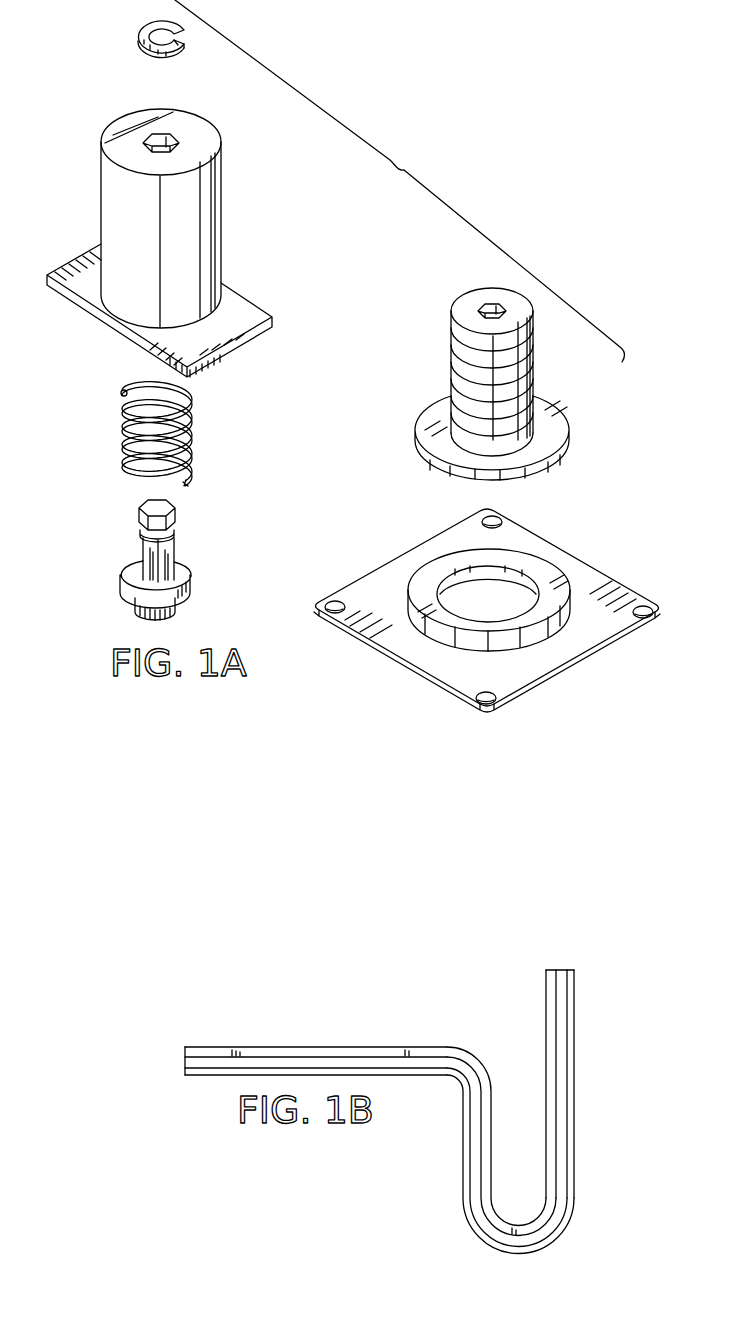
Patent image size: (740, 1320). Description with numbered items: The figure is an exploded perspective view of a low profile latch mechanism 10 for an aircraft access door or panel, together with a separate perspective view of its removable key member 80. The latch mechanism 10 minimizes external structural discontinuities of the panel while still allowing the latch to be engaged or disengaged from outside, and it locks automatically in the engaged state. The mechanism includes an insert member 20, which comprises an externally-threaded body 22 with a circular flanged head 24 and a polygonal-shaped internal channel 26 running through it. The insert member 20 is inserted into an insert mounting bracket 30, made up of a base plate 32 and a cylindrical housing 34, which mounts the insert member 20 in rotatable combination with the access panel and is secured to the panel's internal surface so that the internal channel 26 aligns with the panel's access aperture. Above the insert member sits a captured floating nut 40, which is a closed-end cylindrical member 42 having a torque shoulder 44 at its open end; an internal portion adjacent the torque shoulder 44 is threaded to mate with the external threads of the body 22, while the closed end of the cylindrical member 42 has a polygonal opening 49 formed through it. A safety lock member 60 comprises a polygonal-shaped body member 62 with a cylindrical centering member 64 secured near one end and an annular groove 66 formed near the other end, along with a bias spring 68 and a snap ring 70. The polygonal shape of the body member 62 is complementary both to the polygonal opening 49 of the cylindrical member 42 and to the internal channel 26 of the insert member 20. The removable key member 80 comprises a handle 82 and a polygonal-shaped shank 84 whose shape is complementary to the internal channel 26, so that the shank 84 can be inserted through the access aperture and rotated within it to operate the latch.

In FIG. 1A, the low profile latch mechanism 10 is at (399, 181).
In FIG. 1A, the insert member 20 is at (506, 371).
In FIG. 1A, the threaded body 22 is at (464, 359).
In FIG. 1A, the circular flanged head 24 is at (552, 436).
In FIG. 1A, the polygonal-shaped internal channel 26 is at (478, 305).
In FIG. 1A, the insert mounting bracket 30 is at (487, 602).
In FIG. 1A, the base plate 32 is at (590, 576).
In FIG. 1A, the cylindrical housing 34 is at (518, 557).
In FIG. 1A, the captured floating nut 40 is at (173, 243).
In FIG. 1A, the cylindrical member 42 is at (147, 218).
In FIG. 1A, the torque shoulder 44 is at (242, 318).
In FIG. 1A, the polygonal opening 49 is at (178, 155).
In FIG. 1A, the safety lock member 60 is at (155, 553).
In FIG. 1A, the polygonal-shaped body member 62 is at (168, 553).
In FIG. 1A, the cylindrical centering member 64 is at (130, 579).
In FIG. 1A, the annular groove 66 is at (137, 521).
In FIG. 1A, the bias spring 68 is at (186, 433).
In FIG. 1A, the snap ring 70 is at (140, 35).
In FIG. 1B, the removable key member 80 is at (407, 1112).
In FIG. 1B, the handle 82 is at (577, 1018).
In FIG. 1B, the polygonal-shaped shank 84 is at (277, 1046).